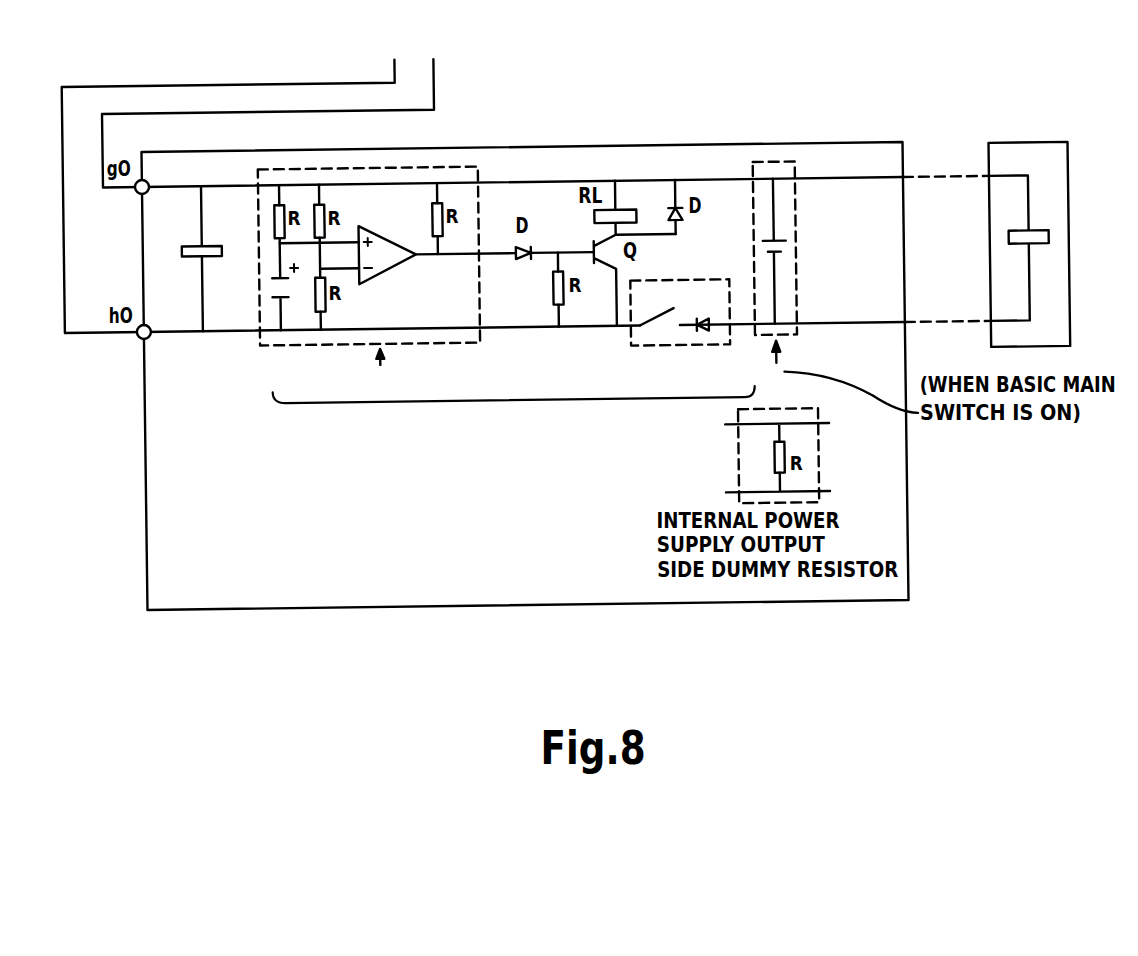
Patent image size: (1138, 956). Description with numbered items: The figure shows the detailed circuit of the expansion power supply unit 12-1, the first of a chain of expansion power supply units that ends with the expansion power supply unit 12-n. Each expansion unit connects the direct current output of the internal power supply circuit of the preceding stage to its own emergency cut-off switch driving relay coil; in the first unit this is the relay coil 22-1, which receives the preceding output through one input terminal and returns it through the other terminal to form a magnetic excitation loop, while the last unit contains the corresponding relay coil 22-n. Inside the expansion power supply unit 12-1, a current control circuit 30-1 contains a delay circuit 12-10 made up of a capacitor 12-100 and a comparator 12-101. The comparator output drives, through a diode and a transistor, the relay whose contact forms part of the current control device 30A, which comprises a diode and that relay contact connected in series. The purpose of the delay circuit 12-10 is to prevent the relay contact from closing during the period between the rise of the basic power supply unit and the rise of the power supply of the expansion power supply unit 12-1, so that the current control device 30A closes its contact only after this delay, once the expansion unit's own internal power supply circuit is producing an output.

The expansion power supply unit 12-1 is at (646, 143).
The expansion power supply unit 12-n is at (1014, 142).
The emergency cut-off switch driving relay coil 22-1 is at (185, 257).
The emergency cut-off switch driving relay coil 22-n is at (1009, 239).
The capacitor 12-100 is at (268, 285).
The delay circuit 12-10 is at (302, 348).
The comparator 12-101 is at (407, 262).
The current control circuit 30-1 is at (514, 395).
The current control device 30A is at (678, 279).